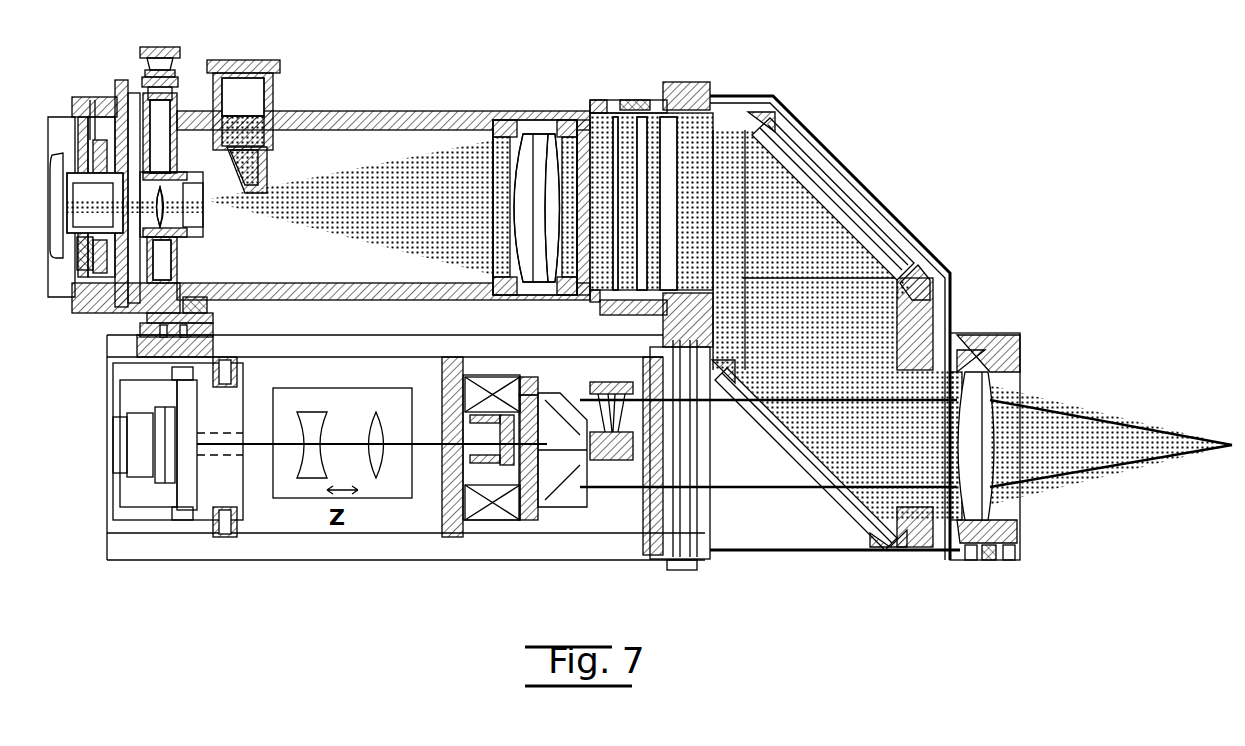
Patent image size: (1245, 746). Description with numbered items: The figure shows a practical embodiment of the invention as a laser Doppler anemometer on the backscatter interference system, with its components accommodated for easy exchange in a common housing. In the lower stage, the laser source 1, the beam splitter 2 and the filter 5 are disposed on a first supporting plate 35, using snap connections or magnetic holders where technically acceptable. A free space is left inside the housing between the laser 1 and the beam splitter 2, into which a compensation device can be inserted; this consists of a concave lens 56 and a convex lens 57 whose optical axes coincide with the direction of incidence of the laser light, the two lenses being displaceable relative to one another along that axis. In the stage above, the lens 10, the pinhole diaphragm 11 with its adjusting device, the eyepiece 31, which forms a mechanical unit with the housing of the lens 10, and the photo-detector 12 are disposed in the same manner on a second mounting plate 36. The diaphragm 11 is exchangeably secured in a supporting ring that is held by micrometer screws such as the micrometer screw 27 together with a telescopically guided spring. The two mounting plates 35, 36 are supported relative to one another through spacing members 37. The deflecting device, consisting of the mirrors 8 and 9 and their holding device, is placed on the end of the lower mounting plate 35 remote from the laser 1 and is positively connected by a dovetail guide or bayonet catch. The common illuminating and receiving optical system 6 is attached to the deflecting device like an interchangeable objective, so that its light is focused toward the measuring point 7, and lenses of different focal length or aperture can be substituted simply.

The laser source 1 is at (160, 603).
The beam splitter 2 is at (533, 603).
The filter 5 is at (613, 440).
The common illuminating and receiving optical system 6 is at (992, 597).
The focal point 7 is at (1111, 445).
The mirror 8 is at (787, 430).
The mirror 9 is at (876, 242).
The lens 10 is at (535, 186).
The pinhole diaphragm 11 is at (204, 217).
The photo-detector 12 is at (52, 158).
The micrometer screw 27 is at (160, 146).
The eyepiece 31 is at (250, 148).
The first supporting plate 35 is at (360, 561).
The second mounting plate 36 is at (362, 340).
The spacing member 37 is at (452, 540).
The concave lens 56 is at (308, 411).
The convex lens 57 is at (378, 411).